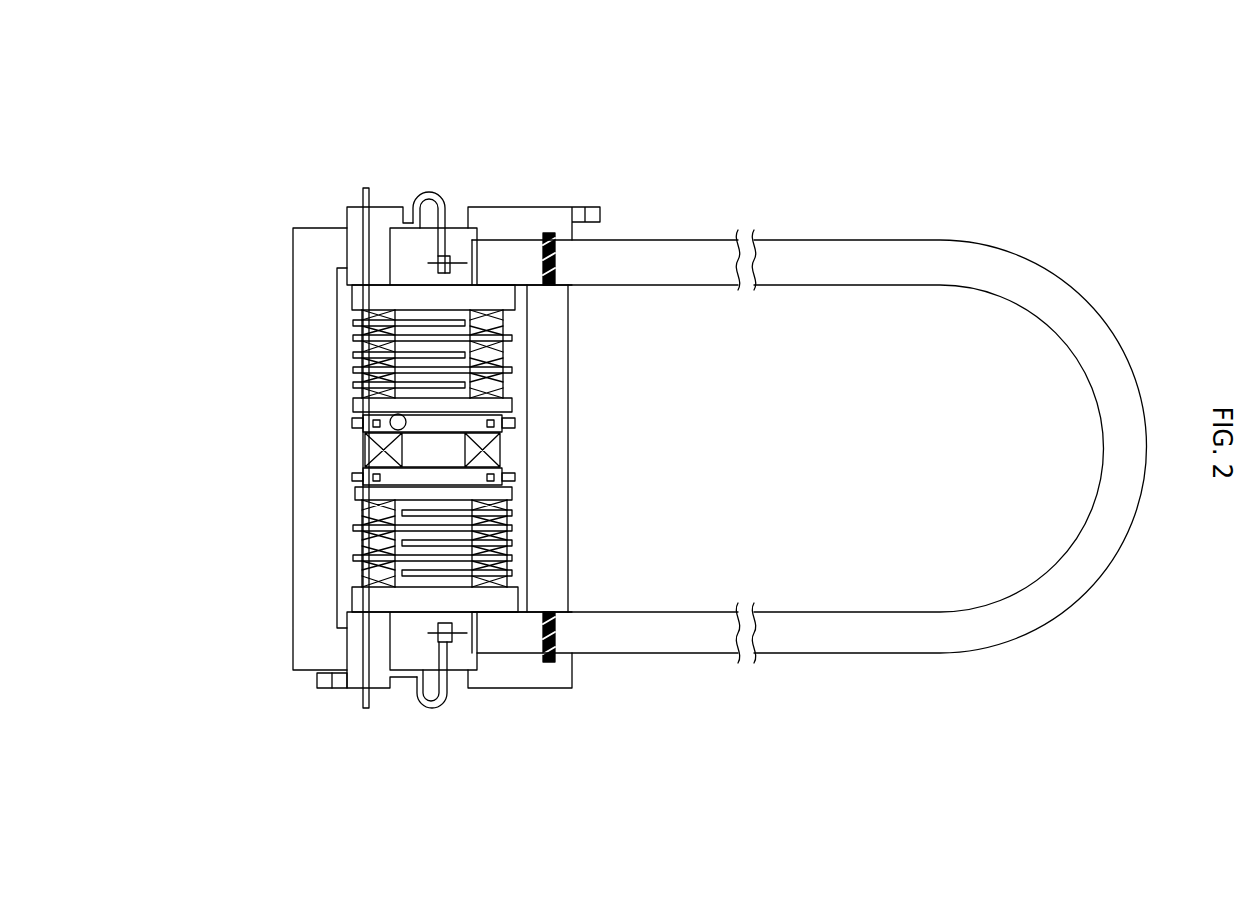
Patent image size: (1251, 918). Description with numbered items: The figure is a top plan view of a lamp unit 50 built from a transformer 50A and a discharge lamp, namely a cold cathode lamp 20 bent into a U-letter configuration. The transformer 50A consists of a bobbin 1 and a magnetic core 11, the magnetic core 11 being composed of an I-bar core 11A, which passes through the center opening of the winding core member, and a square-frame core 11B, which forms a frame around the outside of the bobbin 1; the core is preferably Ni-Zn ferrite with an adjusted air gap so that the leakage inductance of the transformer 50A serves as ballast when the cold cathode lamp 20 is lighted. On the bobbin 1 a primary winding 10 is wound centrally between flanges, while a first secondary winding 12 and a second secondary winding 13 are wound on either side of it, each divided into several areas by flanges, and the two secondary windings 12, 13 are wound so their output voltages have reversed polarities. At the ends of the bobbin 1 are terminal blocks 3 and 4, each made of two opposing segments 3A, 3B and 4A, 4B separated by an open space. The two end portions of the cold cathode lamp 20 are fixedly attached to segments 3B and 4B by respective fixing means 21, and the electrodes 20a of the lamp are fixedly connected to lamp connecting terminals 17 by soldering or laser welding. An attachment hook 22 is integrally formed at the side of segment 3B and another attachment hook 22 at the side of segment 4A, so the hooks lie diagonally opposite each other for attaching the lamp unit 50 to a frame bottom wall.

The lamp unit 50 is at (760, 106).
The transformer 50A is at (276, 594).
The bobbin 1 is at (353, 208).
The terminal block 3 is at (461, 179).
The segment 3A is at (387, 207).
The segment 3B is at (507, 217).
The terminal block 4 is at (427, 712).
The segment 4A is at (355, 692).
The segment 4B is at (505, 680).
The primary winding 10 is at (370, 448).
The magnetic core 11 is at (361, 534).
The I-bar core 11A is at (410, 655).
The square-frame core 11B is at (300, 283).
The first secondary winding 12 is at (360, 345).
The second secondary winding 13 is at (357, 520).
The lamp connecting terminal 17 is at (428, 192).
The cold cathode lamp 20 is at (838, 252).
The electrode 20a is at (462, 260).
The fixing means 21 is at (543, 260).
The attachment hook 22 is at (593, 210).